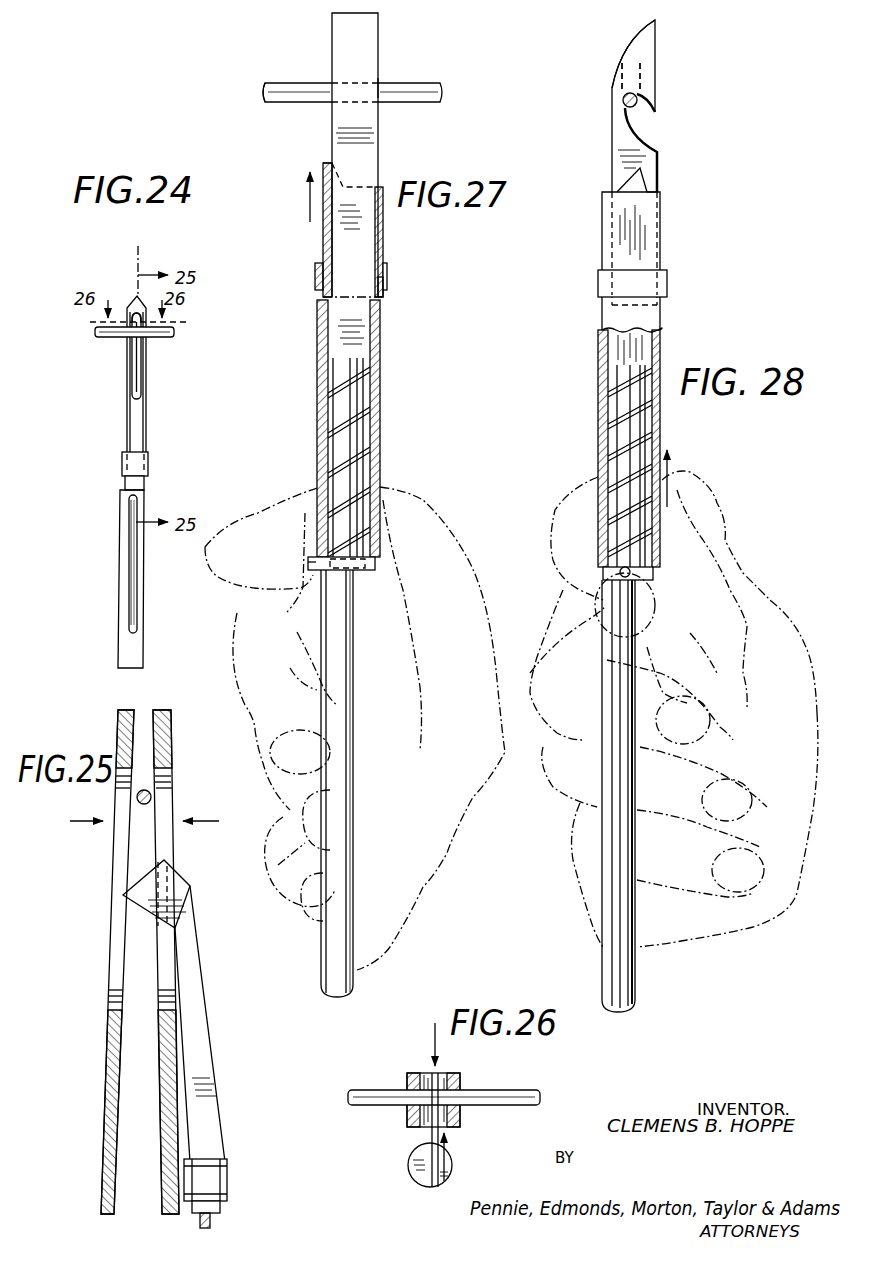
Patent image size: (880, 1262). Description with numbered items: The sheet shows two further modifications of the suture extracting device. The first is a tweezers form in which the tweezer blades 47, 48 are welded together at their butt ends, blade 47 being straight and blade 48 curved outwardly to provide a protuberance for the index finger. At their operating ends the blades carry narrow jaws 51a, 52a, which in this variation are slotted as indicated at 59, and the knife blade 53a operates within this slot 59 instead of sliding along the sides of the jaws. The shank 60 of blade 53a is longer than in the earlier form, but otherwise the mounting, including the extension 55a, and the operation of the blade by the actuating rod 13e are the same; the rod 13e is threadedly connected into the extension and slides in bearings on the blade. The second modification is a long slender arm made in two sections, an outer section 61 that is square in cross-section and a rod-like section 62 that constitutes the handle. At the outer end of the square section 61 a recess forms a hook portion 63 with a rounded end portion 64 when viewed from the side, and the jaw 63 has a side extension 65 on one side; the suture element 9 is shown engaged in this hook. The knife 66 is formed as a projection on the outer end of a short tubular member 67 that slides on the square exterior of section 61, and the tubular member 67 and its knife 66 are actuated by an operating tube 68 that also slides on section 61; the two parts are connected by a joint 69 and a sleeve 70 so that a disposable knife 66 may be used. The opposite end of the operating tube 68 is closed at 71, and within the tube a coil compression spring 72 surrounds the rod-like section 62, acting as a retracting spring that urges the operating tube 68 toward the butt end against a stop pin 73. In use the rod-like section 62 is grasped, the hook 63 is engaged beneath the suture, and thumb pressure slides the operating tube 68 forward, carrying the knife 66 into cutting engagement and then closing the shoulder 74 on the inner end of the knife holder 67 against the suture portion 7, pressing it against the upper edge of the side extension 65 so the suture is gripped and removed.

In FIG. 27, the suture portion 7 is at (436, 92).
In FIG. 26, the ball end of rod 9 is at (444, 1097).
In FIG. 27, the ball end of rod 9 is at (284, 85).
In FIG. 28, the ball end of rod 9 is at (638, 105).
In FIG. 24, the actuating rod 13e is at (128, 557).
In FIG. 25, the actuating rod 13e is at (212, 1221).
In FIG. 25, the tweezer blade 47 is at (165, 1097).
In FIG. 25, the tweezer blade 48 is at (110, 1153).
In FIG. 24, the narrow jaw 51a is at (146, 412).
In FIG. 25, the narrow jaw 51a is at (171, 742).
In FIG. 26, the narrow jaw 51a is at (462, 1122).
In FIG. 25, the narrow jaw 52a is at (118, 714).
In FIG. 26, the narrow jaw 52a is at (408, 1080).
In FIG. 24, the knife blade 53a is at (131, 373).
In FIG. 25, the knife blade 53a is at (138, 903).
In FIG. 26, the knife blade 53a is at (431, 1134).
In FIG. 25, the extension 55a is at (228, 1167).
In FIG. 26, the extension 55a is at (453, 1165).
In FIG. 24, the slot 59 is at (140, 338).
In FIG. 25, the slot 59 is at (118, 850).
In FIG. 25, the shank 60 is at (200, 1000).
In FIG. 28, the outer section 61 is at (612, 176).
In FIG. 27, the tube 61a is at (371, 162).
In FIG. 27, the rod-like section 62 is at (350, 647).
In FIG. 28, the rod-like section 62 is at (617, 674).
In FIG. 28, the hook portion 63 is at (651, 76).
In FIG. 28, the rounded end portion 64 is at (631, 47).
In FIG. 27, the side extension 65 is at (380, 88).
In FIG. 28, the side extension 65 is at (612, 90).
In FIG. 27, the knife 66 is at (324, 170).
In FIG. 28, the knife 66 is at (618, 190).
In FIG. 27, the tubular member 67 is at (384, 228).
In FIG. 28, the tubular member 67 is at (661, 232).
In FIG. 27, the operating tube 68 is at (382, 442).
In FIG. 28, the operating tube 68 is at (659, 356).
In FIG. 27, the joint 69 is at (387, 292).
In FIG. 27, the sleeve 70 is at (388, 272).
In FIG. 28, the sleeve 70 is at (668, 281).
In FIG. 27, the closed end 71 is at (375, 567).
In FIG. 28, the closed end 71 is at (603, 576).
In FIG. 27, the coil compression spring 72 is at (373, 423).
In FIG. 28, the coil compression spring 72 is at (608, 416).
In FIG. 27, the stop pin 73 is at (306, 588).
In FIG. 28, the stop pin 73 is at (632, 572).
In FIG. 28, the shoulder 74 is at (657, 193).